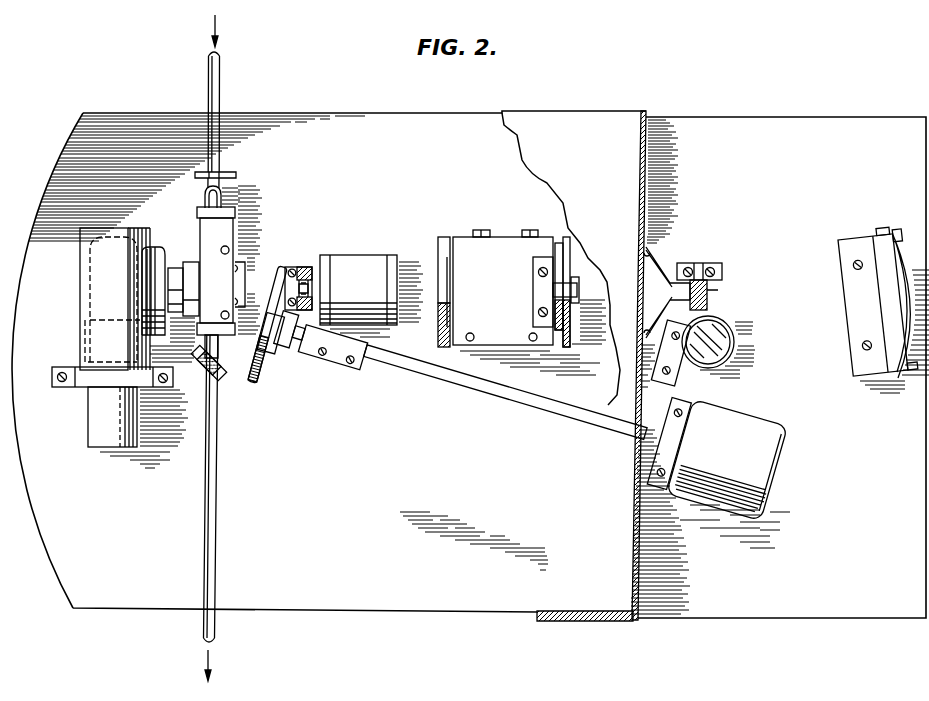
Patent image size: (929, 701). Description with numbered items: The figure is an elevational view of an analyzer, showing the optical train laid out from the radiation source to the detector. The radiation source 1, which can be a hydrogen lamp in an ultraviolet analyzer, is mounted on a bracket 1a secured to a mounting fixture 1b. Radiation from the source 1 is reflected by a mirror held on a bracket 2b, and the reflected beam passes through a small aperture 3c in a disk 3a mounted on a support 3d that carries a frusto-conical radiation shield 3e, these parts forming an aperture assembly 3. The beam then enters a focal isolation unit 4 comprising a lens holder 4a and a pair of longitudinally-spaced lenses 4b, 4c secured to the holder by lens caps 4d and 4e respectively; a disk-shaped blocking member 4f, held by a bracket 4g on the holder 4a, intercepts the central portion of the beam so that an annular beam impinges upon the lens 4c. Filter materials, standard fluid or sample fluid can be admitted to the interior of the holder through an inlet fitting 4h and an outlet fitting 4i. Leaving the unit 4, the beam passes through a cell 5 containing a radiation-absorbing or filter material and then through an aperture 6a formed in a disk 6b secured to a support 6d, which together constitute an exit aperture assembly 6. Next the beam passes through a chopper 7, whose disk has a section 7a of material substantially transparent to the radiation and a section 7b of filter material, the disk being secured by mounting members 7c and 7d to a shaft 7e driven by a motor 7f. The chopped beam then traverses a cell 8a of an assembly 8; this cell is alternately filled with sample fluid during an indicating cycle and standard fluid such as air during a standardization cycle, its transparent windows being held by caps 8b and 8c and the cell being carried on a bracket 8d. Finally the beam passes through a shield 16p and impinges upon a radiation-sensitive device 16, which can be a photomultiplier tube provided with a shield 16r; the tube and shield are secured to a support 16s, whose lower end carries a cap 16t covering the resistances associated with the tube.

The radiation source 1 is at (712, 355).
The bracket 1a is at (735, 338).
The mounting fixture 1b is at (680, 379).
The bracket 2b is at (851, 360).
The aperture assembly 3 is at (688, 276).
The disk 3a is at (708, 298).
The aperture 3c is at (706, 290).
The support 3d is at (697, 264).
The frusto-conical radiation shield 3e is at (655, 283).
The focal isolation unit 4 is at (509, 273).
The lens holder 4a is at (492, 346).
The lens 4b is at (446, 266).
The lens 4c is at (571, 260).
The lens cap 4d is at (437, 340).
The lens cap 4e is at (568, 240).
The disk-shaped blocking member 4f is at (580, 290).
The bracket 4g is at (533, 295).
The inlet fitting 4h is at (478, 229).
The outlet fitting 4i is at (530, 229).
The cell 5 is at (362, 262).
The exit aperture assembly 6 is at (305, 257).
The aperture 6a is at (294, 268).
The disk 6b is at (313, 294).
The support 6d is at (290, 293).
The chopper 7 is at (515, 393).
The section 7a is at (248, 392).
The section 7b is at (279, 299).
The mounting member 7c is at (264, 338).
The mounting member 7d is at (275, 347).
The shaft 7e is at (492, 394).
The motor 7f is at (775, 420).
The cell assembly 8 is at (224, 282).
The cell 8a is at (225, 279).
The cap 8b is at (245, 265).
The cap 8c is at (196, 262).
The bracket 8d is at (201, 333).
The radiation-sensitive device 16 is at (112, 320).
The shield 16p is at (155, 252).
The shield 16r is at (139, 230).
The support 16s is at (70, 386).
The cap 16t is at (88, 430).